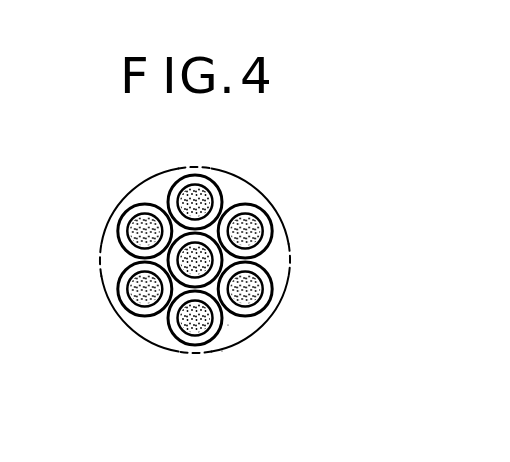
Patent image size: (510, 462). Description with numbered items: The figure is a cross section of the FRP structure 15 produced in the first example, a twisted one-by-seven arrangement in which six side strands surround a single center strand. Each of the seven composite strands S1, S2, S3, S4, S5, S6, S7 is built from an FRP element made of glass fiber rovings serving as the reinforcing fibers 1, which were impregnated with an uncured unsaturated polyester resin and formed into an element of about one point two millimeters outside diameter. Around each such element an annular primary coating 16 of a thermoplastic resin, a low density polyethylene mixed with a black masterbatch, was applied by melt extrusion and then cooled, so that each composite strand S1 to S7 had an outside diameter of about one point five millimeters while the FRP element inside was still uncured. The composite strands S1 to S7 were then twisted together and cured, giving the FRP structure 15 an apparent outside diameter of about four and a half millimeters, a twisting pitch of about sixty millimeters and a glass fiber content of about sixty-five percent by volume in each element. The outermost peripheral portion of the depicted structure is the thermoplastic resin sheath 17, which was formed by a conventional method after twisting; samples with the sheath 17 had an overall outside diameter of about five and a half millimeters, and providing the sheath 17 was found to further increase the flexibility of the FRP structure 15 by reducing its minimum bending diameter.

The reinforcing fibers 1 is at (263, 187).
The FRP structure 15 is at (195, 254).
The primary coating 16 is at (228, 325).
The thermoplastic resin sheath 17 is at (100, 263).
The composite strand S1 is at (263, 233).
The composite strand S2 is at (263, 300).
The composite strand S3 is at (172, 332).
The composite strand S4 is at (222, 259).
The composite strand S5 is at (125, 290).
The composite strand S6 is at (128, 214).
The composite strand S7 is at (180, 183).